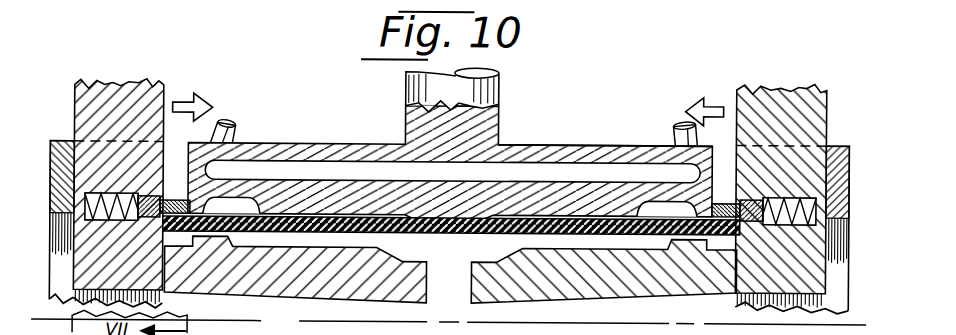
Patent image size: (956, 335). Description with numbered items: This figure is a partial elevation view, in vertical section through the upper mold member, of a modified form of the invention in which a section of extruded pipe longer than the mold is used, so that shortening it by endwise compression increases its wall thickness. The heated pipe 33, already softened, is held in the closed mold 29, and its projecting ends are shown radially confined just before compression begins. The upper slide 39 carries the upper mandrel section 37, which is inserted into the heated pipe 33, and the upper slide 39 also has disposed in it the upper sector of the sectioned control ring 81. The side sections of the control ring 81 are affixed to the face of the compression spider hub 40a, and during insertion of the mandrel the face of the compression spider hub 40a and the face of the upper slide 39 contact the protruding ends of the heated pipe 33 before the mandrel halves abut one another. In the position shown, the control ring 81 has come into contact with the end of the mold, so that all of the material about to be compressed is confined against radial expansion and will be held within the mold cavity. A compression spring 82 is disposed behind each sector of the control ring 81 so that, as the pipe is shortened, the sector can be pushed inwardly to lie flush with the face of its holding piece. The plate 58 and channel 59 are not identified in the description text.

The mold 29 is at (581, 146).
The heated pipe 33 is at (424, 236).
The upper mandrel section 37 is at (310, 299).
The upper slide 39 is at (74, 103).
The compression spider hub 40a is at (50, 271).
The pressure plate 58 is at (330, 164).
The channel 59 is at (452, 168).
The control ring 81 is at (173, 200).
The compression spring 82 is at (84, 219).